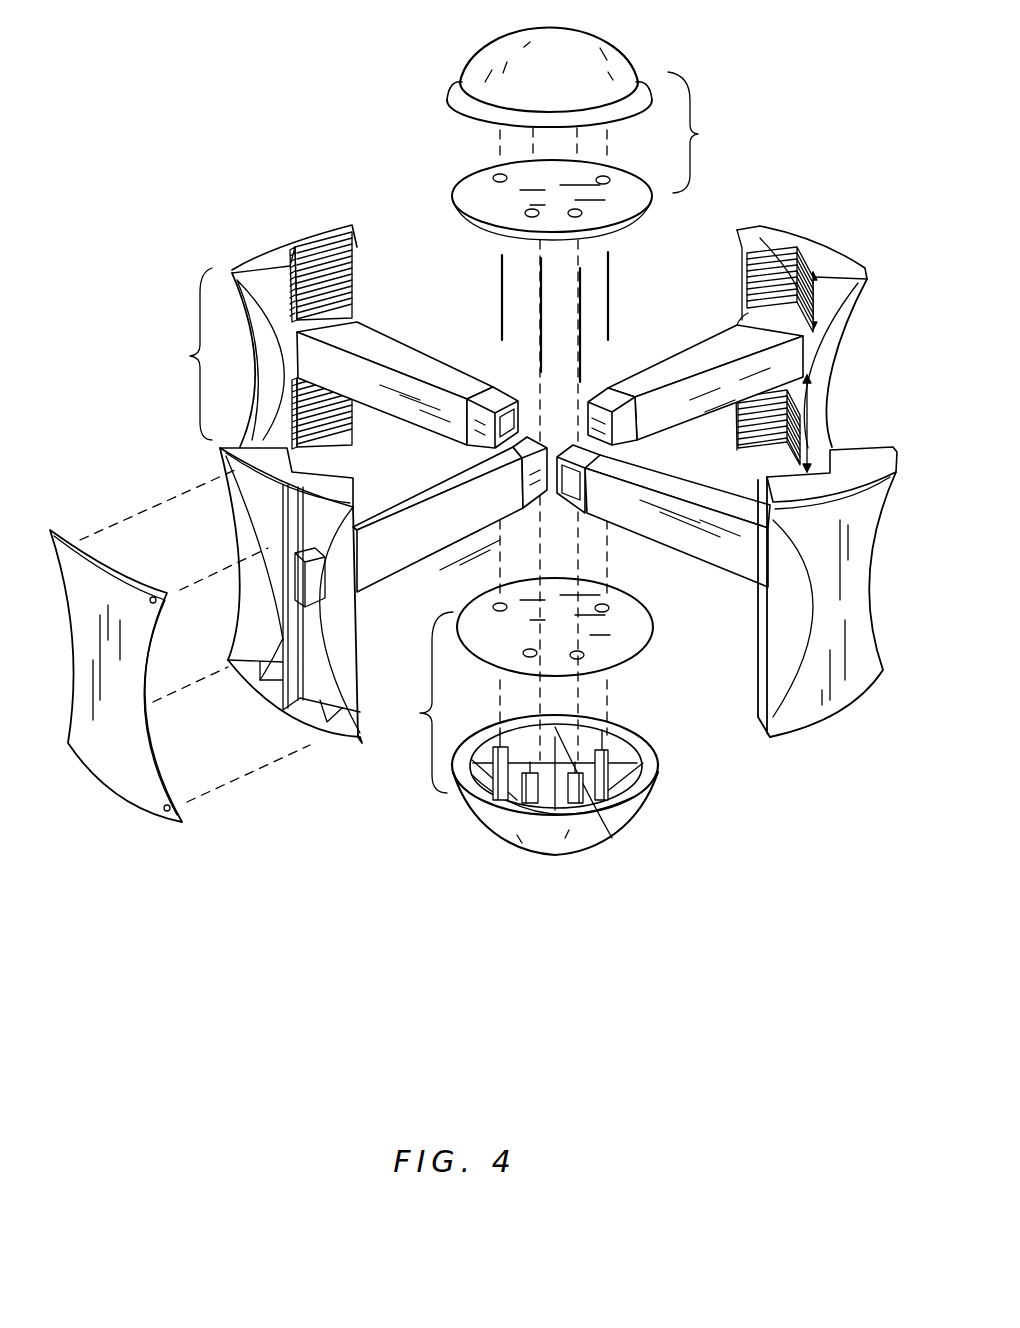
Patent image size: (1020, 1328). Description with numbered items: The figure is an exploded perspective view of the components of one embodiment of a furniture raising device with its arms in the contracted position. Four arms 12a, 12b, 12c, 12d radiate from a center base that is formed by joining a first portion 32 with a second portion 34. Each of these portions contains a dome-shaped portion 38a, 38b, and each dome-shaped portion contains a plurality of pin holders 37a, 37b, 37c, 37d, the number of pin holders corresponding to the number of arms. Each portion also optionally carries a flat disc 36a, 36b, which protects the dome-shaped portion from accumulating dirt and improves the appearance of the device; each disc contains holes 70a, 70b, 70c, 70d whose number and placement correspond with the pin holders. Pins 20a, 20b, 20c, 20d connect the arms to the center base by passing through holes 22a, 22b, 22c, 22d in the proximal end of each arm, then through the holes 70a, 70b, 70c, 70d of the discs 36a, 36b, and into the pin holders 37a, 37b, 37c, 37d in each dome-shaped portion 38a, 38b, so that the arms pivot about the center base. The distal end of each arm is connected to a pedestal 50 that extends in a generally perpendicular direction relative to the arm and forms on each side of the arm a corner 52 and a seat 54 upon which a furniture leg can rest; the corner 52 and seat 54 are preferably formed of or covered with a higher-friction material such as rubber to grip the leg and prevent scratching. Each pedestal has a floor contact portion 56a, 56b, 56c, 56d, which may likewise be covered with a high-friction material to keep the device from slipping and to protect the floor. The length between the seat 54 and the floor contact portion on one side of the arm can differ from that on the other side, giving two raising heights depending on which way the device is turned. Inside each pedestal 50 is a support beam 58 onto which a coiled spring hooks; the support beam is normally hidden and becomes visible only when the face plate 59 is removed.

The arm 12a is at (750, 398).
The arm 12b is at (641, 514).
The arm 12c is at (413, 564).
The arm 12d is at (348, 377).
The pin 20a is at (609, 292).
The pin 20b is at (582, 353).
The pin 20c is at (541, 308).
The pin 20d is at (500, 263).
The hole 22a is at (608, 400).
The hole 22b is at (578, 448).
The hole 22c is at (525, 447).
The hole 22d is at (497, 398).
The first portion 32 is at (699, 132).
The second portion 34 is at (414, 702).
The disc 36a is at (462, 183).
The disc 36b is at (653, 627).
The pin holder 37a is at (612, 735).
The pin holder 37b is at (587, 778).
The pin holder 37c is at (560, 828).
The pin holder 37d is at (497, 745).
The dome-shaped portion 38a is at (501, 33).
The dome-shaped portion 38b is at (512, 840).
The pedestal 50 is at (838, 232).
The corner 52 is at (772, 272).
The seat 54 is at (338, 336).
The floor contact portion 56a is at (752, 240).
The floor contact portion 56b is at (868, 455).
The floor contact portion 56c is at (318, 492).
The floor contact portion 56d is at (267, 257).
The support beam 58 is at (283, 640).
The face plate 59 is at (125, 774).
The hole 70a is at (608, 178).
The hole 70b is at (577, 215).
The hole 70c is at (530, 215).
The hole 70d is at (500, 180).